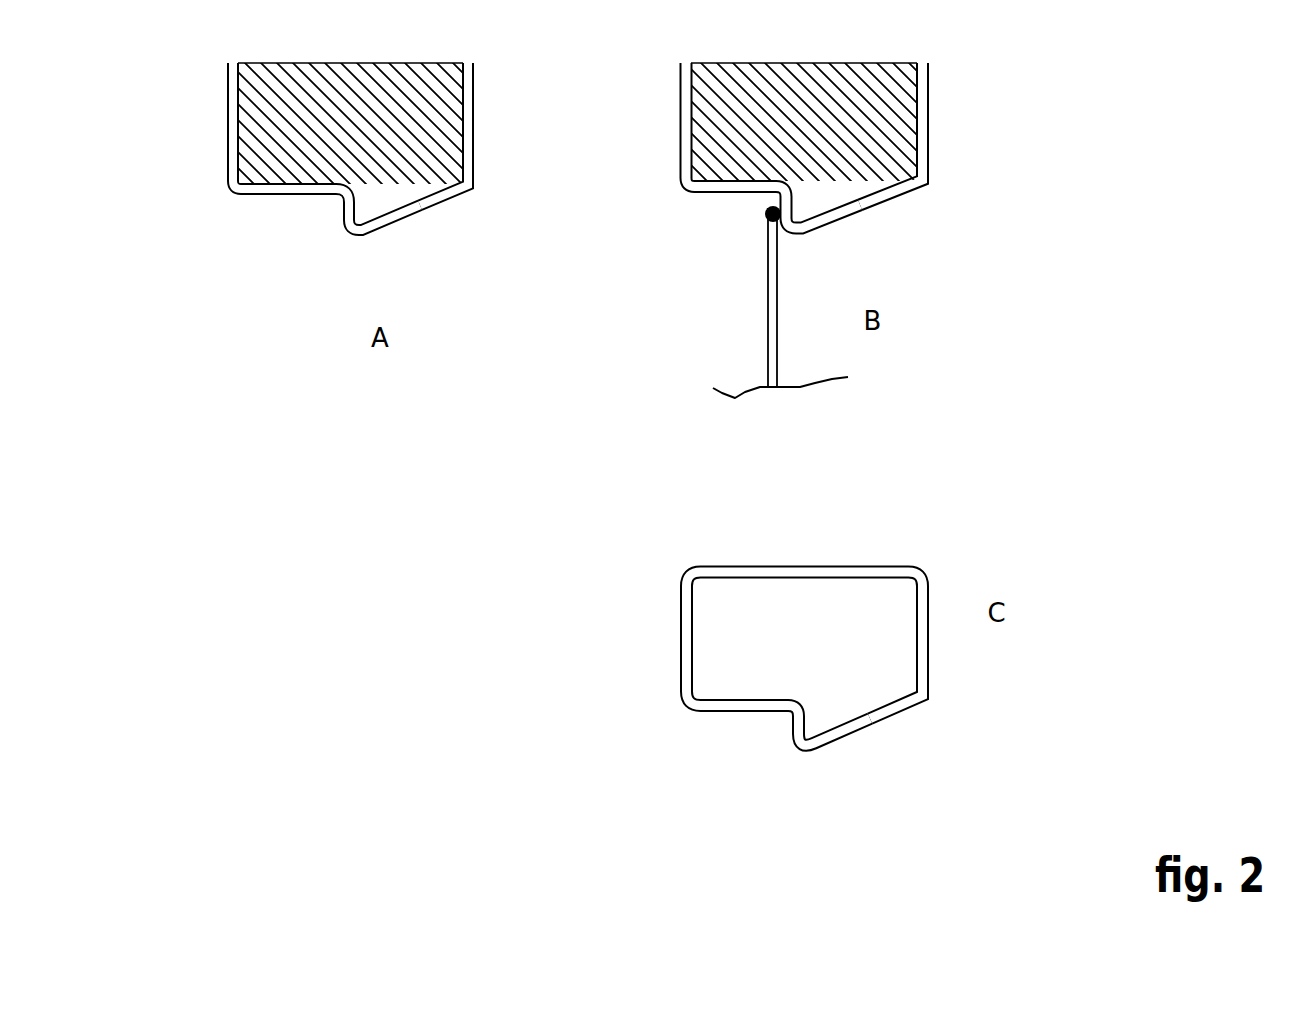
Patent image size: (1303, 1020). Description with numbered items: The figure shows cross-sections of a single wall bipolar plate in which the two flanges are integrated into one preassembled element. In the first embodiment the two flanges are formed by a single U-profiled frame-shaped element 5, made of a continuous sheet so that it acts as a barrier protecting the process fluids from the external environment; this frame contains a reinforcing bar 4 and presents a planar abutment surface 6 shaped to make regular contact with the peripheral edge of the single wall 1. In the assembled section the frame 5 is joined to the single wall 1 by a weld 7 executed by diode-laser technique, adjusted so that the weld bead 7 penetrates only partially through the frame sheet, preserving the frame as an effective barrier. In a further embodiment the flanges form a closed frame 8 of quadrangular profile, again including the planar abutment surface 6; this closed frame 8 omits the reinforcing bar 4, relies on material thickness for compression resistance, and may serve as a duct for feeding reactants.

In FIG. 2B, the single wall 1 is at (773, 313).
In FIG. 2A, the reinforcing bar 4 is at (280, 118).
In FIG. 2B, the reinforcing bar 4 is at (730, 98).
In FIG. 2A, the U-profiled frame-shaped element 5 is at (233, 147).
In FIG. 2B, the U-profiled frame-shaped element 5 is at (686, 138).
In FIG. 2A, the planar abutment surface 6 is at (338, 215).
In FIG. 2B, the planar abutment surface 6 is at (770, 202).
In FIG. 2C, the planar abutment surface 6 is at (790, 728).
In FIG. 2B, the weld 7 is at (768, 216).
In FIG. 2C, the closed frame 8 is at (687, 647).